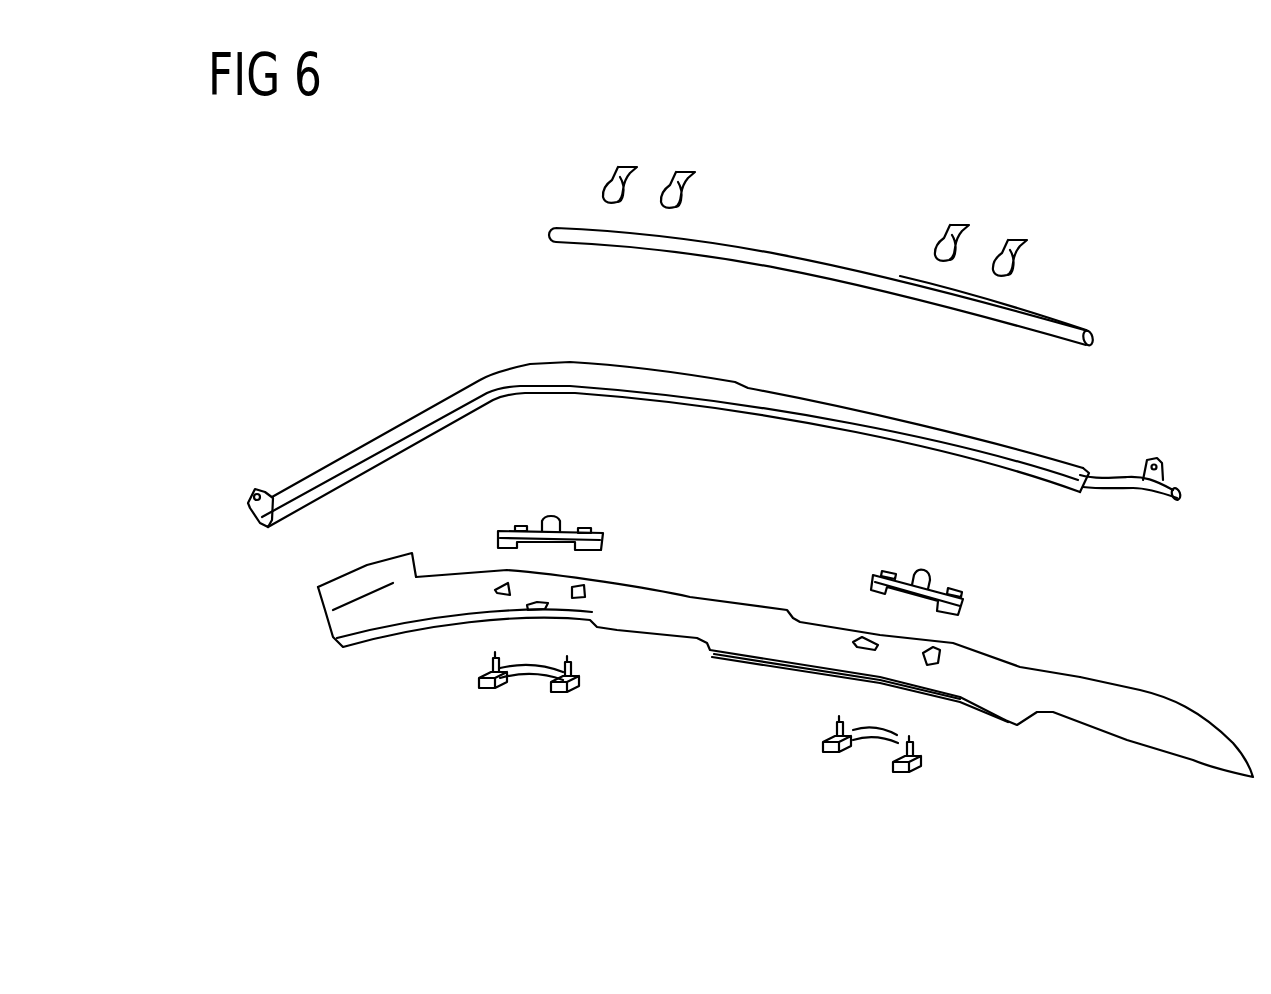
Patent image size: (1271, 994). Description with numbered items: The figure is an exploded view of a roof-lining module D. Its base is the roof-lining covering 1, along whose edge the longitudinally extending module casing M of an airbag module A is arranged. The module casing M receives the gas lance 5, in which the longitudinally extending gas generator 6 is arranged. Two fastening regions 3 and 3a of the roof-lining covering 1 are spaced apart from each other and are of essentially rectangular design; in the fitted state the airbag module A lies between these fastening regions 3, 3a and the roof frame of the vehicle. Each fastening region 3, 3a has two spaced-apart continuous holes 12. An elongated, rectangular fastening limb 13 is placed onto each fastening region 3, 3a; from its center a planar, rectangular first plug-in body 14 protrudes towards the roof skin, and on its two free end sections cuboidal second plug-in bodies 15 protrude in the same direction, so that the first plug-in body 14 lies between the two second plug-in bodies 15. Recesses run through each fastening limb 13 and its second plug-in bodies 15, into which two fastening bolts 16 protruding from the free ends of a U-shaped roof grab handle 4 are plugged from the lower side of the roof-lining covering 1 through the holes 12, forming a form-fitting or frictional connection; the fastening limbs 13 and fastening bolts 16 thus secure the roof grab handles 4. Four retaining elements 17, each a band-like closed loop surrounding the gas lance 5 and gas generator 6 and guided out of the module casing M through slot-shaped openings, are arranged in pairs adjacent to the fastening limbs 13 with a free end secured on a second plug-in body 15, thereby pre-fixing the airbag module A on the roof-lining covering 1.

The roof-lining covering 1 is at (1025, 685).
The fastening region 3 is at (523, 598).
The fastening region 3a is at (880, 670).
The roof grab handle 4 is at (535, 673).
The gas lance 5 is at (1052, 317).
The gas generator 6 is at (820, 262).
The holes 12 is at (502, 587).
The fastening limb 13 is at (498, 532).
The first plug-in body 14 is at (552, 525).
The second plug-in bodies 15 is at (522, 525).
The fastening bolts 16 is at (508, 652).
The retaining elements 17 is at (620, 168).
The airbag module A is at (697, 382).
The module casing M is at (1010, 453).
The roof-lining module D is at (379, 271).